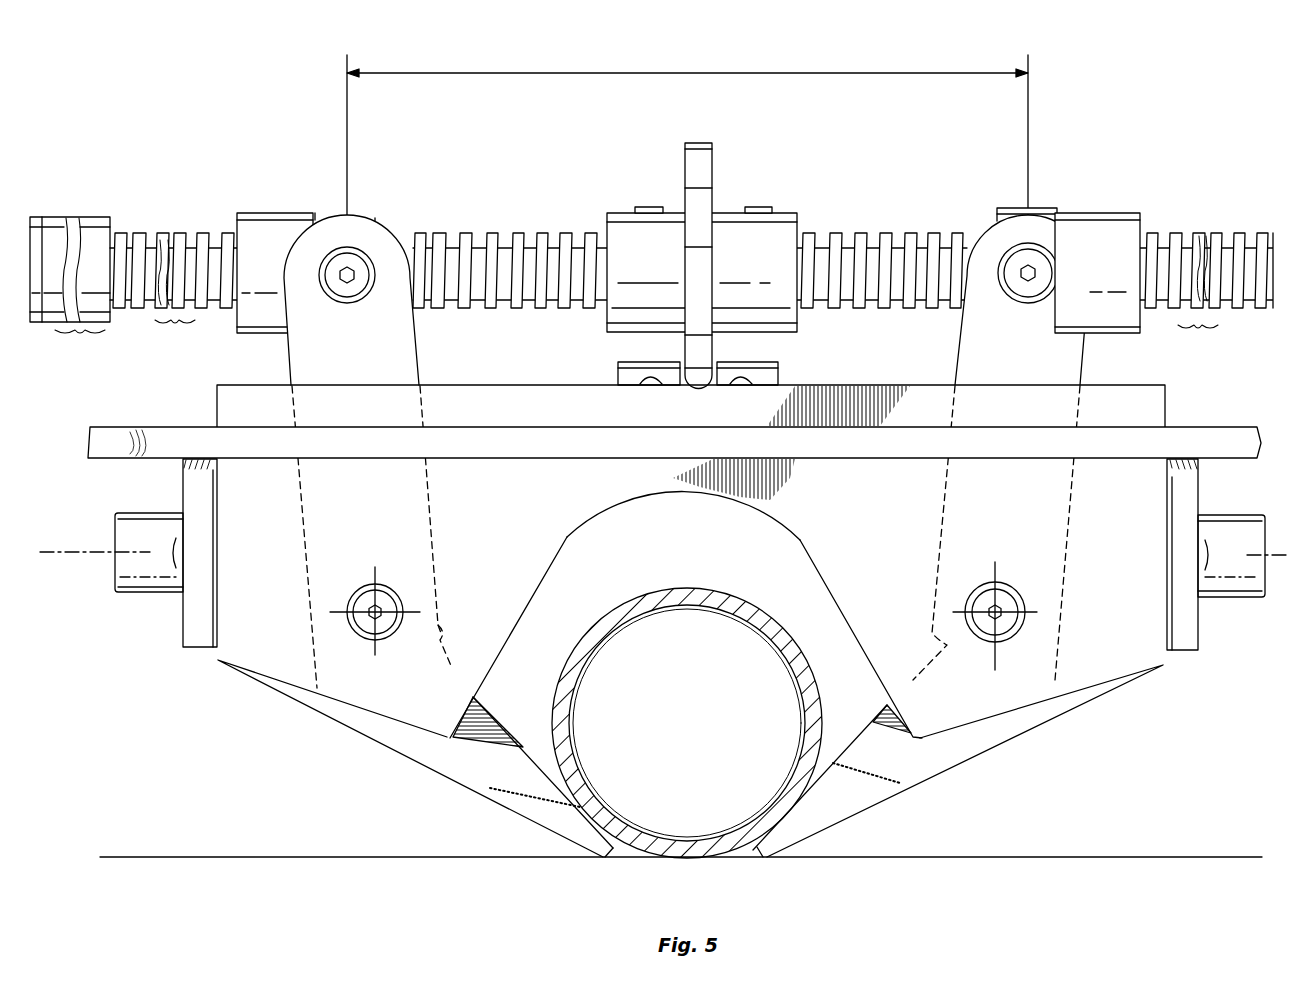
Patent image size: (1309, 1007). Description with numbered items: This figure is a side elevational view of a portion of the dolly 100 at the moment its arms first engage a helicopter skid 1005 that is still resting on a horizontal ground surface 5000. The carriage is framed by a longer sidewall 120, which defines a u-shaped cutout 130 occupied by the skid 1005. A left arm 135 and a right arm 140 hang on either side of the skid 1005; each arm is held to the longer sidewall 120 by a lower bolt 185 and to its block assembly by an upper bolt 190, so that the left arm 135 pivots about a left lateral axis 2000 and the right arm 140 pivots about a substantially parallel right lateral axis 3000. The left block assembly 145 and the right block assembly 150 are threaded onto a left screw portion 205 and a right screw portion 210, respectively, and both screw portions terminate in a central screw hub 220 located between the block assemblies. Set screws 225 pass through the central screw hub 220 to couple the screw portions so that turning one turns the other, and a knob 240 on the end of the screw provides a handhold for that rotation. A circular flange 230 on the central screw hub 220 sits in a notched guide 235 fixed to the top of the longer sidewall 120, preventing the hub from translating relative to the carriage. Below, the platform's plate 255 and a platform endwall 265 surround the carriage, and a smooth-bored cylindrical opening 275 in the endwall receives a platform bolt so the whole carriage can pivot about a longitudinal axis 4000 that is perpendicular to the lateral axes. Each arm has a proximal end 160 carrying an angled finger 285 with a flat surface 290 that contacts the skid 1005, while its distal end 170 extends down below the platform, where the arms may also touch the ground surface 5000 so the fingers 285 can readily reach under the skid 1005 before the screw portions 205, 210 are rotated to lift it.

The dolly 100 is at (180, 157).
The longer sidewall 120 is at (885, 514).
The u-shaped cutout 130 is at (796, 540).
The left arm 135 is at (402, 367).
The right arm 140 is at (973, 368).
The left block assembly 145 is at (325, 205).
The right block assembly 150 is at (1003, 207).
The proximal end 160 is at (392, 230).
The distal end 170 is at (560, 833).
The lower bolt 185 is at (397, 645).
The upper bolt 190 is at (1062, 260).
The left screw portion 205 is at (497, 310).
The right screw portion 210 is at (877, 307).
The central screw hub 220 is at (733, 190).
The set screw 225 is at (645, 207).
The circular flange 230 is at (685, 150).
The notched guide 235 is at (618, 374).
The knob 240 is at (92, 217).
The plate 255 is at (122, 426).
The platform endwall 265 is at (195, 650).
The smooth-bored cylindrical opening 275 is at (133, 592).
The angled finger 285 is at (458, 777).
The flat surface 290 is at (527, 745).
The skid 1005 is at (622, 605).
The left lateral axis 2000 is at (372, 600).
The right lateral axis 3000 is at (1003, 600).
The longitudinal axis 4000 is at (73, 551).
The ground surface 5000 is at (1113, 857).